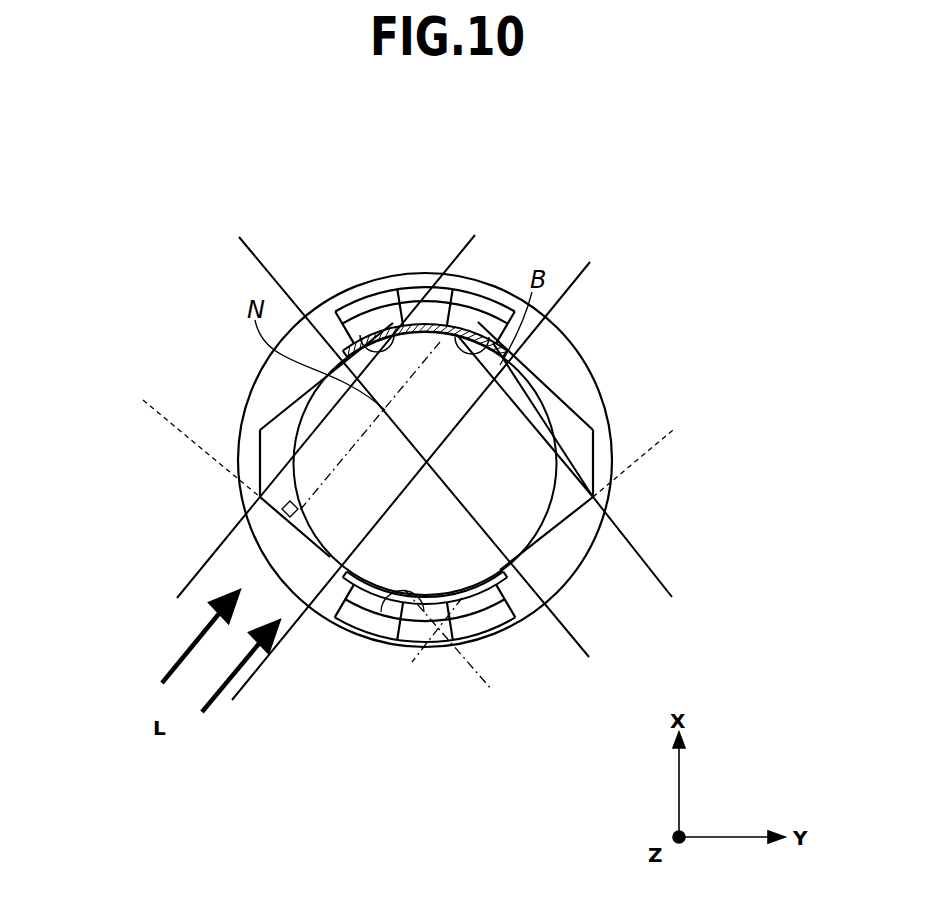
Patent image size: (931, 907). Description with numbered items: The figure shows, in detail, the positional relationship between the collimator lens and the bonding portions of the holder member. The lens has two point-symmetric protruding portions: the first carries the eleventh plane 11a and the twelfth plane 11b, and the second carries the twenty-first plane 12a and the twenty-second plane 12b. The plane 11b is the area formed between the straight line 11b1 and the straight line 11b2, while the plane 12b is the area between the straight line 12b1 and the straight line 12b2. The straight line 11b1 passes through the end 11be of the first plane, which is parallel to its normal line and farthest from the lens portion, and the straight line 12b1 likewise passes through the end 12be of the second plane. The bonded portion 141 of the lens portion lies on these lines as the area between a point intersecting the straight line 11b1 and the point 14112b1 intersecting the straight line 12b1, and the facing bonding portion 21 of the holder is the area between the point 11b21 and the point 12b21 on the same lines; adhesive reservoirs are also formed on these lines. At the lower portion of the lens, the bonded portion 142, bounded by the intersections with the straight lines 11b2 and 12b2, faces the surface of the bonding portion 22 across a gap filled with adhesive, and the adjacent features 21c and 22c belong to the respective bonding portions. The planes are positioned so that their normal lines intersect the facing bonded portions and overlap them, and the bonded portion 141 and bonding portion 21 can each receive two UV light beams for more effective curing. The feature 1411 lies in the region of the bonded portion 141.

The bonding portion 21 is at (437, 292).
The bonding portion 22 is at (424, 612).
The magnet side portion 21c is at (380, 322).
The magnet side portion 22c is at (362, 622).
The bonded portion 141 is at (500, 395).
The bonded portion 142 is at (381, 612).
The yoke protrusion 1411 is at (362, 350).
The eleventh plane 11a is at (272, 420).
The twelfth plane 11b is at (300, 538).
The end of the first plane 11be is at (264, 498).
The straight line 11b1 is at (193, 578).
The straight line 11b2 is at (262, 680).
The point 11b21 is at (393, 320).
The twenty-first plane 12a is at (560, 388).
The twenty-second plane 12b is at (548, 555).
The end of the second plane 12be is at (593, 492).
The straight line 12b1 is at (645, 555).
The straight line 12b2 is at (578, 645).
The point 12b21 is at (462, 318).
The point 14112b1 is at (465, 338).